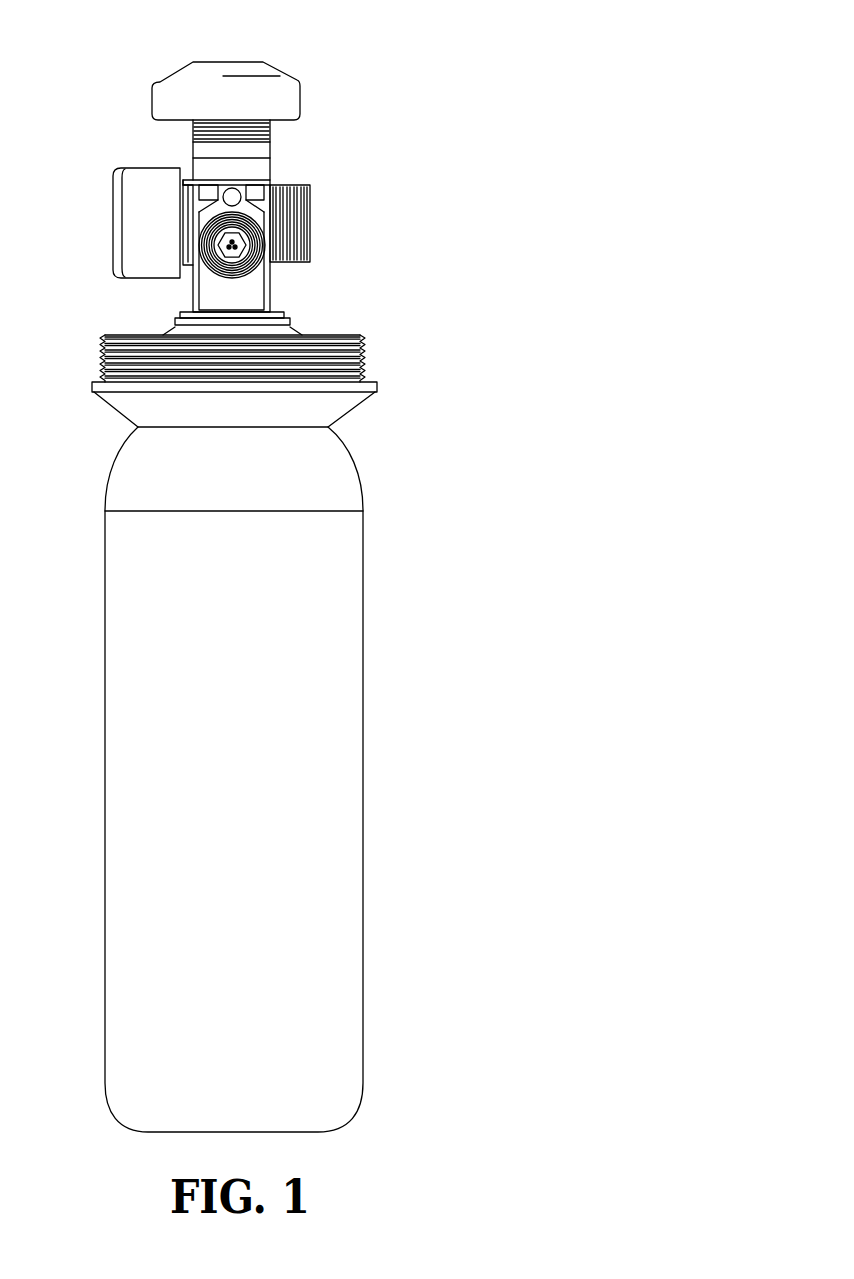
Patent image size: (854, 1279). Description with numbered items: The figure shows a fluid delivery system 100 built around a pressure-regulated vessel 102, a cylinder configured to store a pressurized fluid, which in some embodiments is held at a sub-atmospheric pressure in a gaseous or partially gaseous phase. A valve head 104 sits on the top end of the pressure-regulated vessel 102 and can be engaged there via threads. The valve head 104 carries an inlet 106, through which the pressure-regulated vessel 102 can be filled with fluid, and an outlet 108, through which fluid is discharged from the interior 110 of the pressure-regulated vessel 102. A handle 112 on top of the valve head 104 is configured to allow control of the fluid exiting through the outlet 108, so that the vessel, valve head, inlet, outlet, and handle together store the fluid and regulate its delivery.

The fluid delivery system 100 is at (452, 84).
The pressure-regulated vessel 102 is at (363, 615).
The valve head 104 is at (301, 56).
The inlet 106 is at (114, 203).
The outlet 108 is at (312, 187).
The interior 110 is at (334, 745).
The handle 112 is at (172, 77).